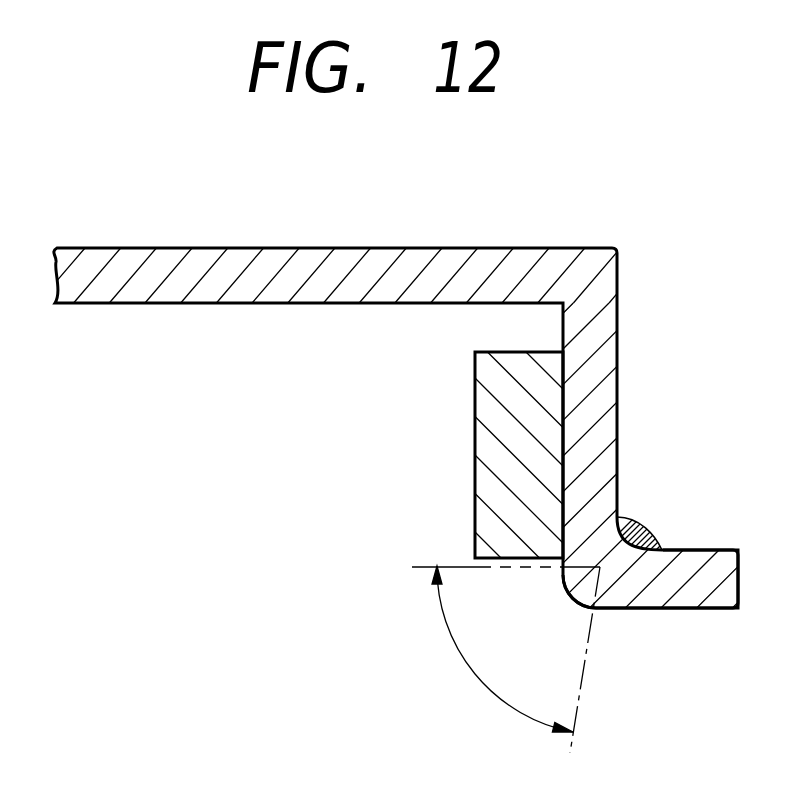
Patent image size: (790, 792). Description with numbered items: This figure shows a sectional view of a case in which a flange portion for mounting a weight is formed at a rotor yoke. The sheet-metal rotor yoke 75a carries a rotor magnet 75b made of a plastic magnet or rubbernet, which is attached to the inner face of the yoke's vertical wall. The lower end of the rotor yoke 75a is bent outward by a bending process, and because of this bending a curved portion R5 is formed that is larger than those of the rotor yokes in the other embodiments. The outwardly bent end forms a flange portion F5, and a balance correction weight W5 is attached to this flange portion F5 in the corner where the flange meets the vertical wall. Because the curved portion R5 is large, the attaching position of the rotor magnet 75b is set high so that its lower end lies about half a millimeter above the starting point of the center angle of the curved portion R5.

The rotor yoke 75a is at (343, 262).
The rotor magnet 75b is at (543, 425).
The balance correction weight W5 is at (630, 520).
The flange portion F5 is at (687, 562).
The curved portion R5 is at (576, 598).